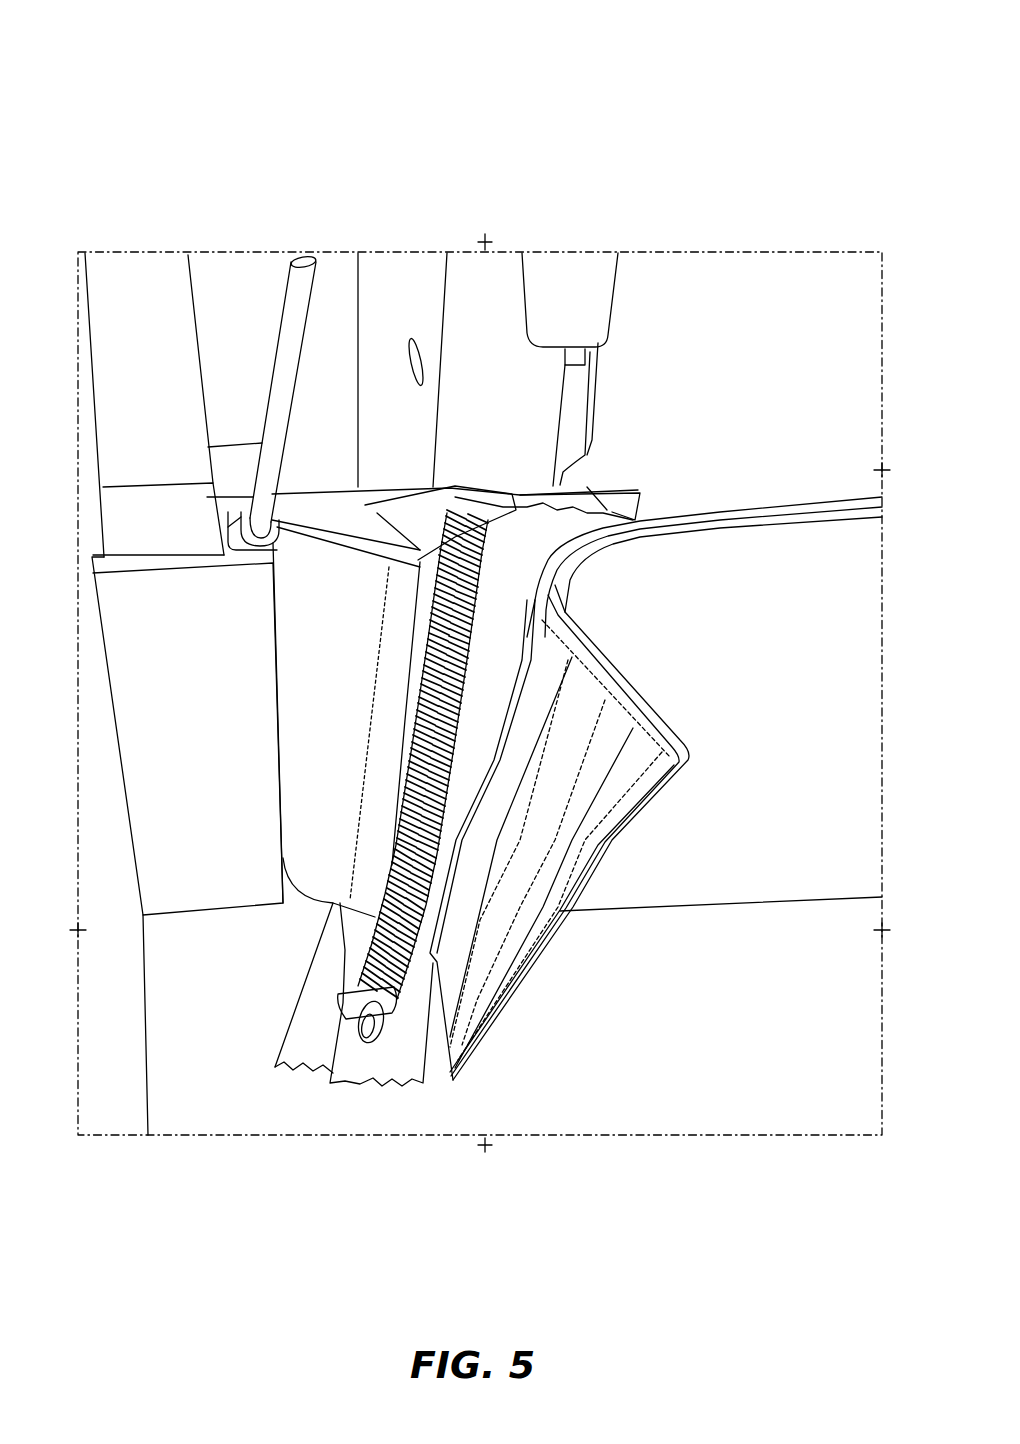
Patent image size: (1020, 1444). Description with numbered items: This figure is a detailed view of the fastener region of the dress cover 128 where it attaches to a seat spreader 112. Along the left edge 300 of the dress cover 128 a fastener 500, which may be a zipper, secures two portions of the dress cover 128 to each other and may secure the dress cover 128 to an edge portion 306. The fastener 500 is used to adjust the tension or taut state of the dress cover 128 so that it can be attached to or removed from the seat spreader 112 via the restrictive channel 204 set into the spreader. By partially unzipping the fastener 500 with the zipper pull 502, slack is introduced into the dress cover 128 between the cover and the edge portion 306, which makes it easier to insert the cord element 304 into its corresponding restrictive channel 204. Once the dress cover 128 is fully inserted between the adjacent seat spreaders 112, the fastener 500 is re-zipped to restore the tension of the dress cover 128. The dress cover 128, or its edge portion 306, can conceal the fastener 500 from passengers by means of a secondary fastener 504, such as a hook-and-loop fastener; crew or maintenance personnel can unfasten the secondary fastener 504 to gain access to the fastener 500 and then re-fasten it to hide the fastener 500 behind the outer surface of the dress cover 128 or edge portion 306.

The dress cover 128 is at (98, 79).
The restrictive channel 204 is at (236, 535).
The cord element 304 is at (277, 437).
The left edge 300 is at (313, 478).
The fastener 500 is at (453, 717).
The seat spreader 112 is at (201, 718).
The edge portion 306 is at (343, 737).
The zipper pull 502 is at (358, 1068).
The secondary fastener 504 is at (545, 862).